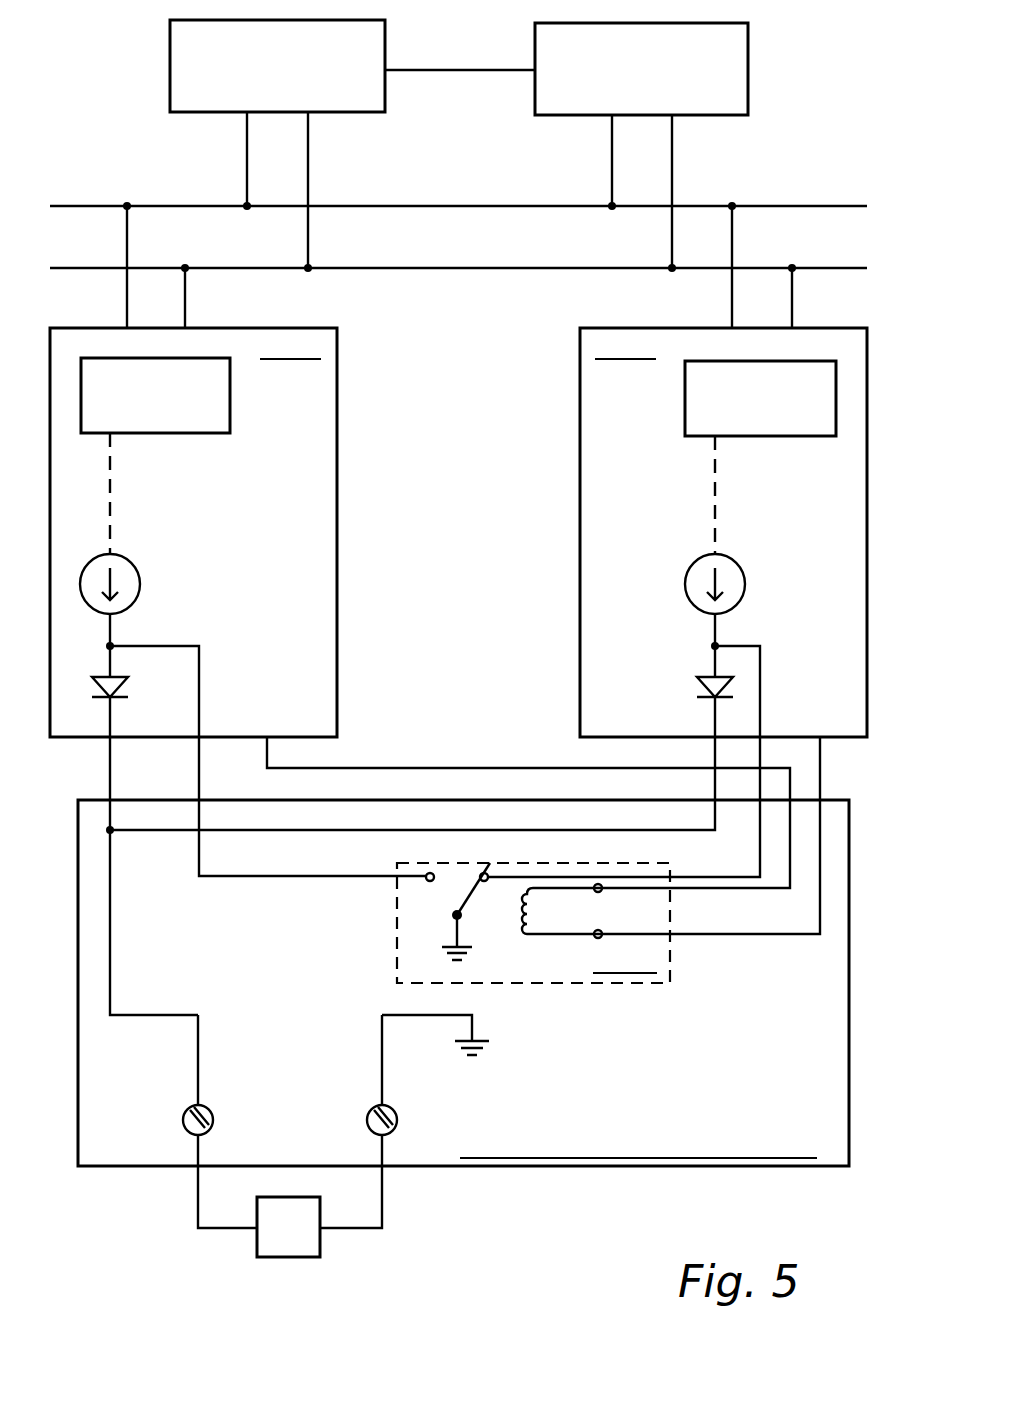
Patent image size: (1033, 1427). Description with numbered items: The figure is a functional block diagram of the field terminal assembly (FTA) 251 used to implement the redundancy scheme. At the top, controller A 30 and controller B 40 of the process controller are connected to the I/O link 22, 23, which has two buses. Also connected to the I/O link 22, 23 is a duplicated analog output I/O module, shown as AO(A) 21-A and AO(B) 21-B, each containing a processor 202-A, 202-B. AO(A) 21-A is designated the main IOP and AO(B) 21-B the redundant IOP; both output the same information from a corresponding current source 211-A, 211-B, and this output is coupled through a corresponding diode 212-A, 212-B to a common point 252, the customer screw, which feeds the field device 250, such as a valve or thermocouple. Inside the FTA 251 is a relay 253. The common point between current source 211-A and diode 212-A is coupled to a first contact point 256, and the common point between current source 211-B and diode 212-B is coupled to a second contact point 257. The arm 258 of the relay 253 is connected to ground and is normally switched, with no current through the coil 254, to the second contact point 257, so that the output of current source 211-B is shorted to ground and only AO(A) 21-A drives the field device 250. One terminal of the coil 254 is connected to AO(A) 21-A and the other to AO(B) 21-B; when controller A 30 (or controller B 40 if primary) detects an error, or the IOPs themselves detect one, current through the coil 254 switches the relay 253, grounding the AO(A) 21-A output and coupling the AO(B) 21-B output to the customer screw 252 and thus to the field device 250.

The controller A 30 is at (170, 50).
The controller B 40 is at (748, 55).
The I/O link 22 is at (740, 206).
The I/O link 23 is at (784, 268).
The AO(A) 21-A is at (339, 380).
The AO(B) 21-B is at (580, 380).
The processor 202-A is at (196, 433).
The processor 202-B is at (699, 436).
The current source 211-A is at (140, 582).
The current source 211-B is at (736, 564).
The diode 212-A is at (126, 688).
The diode 212-B is at (702, 686).
The field terminal assembly (FTA) 251 is at (619, 1118).
The relay 253 is at (670, 965).
The coil 254 is at (527, 935).
The first contact point 256 is at (426, 873).
The second contact point 257 is at (487, 872).
The arm 258 is at (462, 895).
The common point 252 is at (213, 1118).
The field device 250 is at (300, 1257).